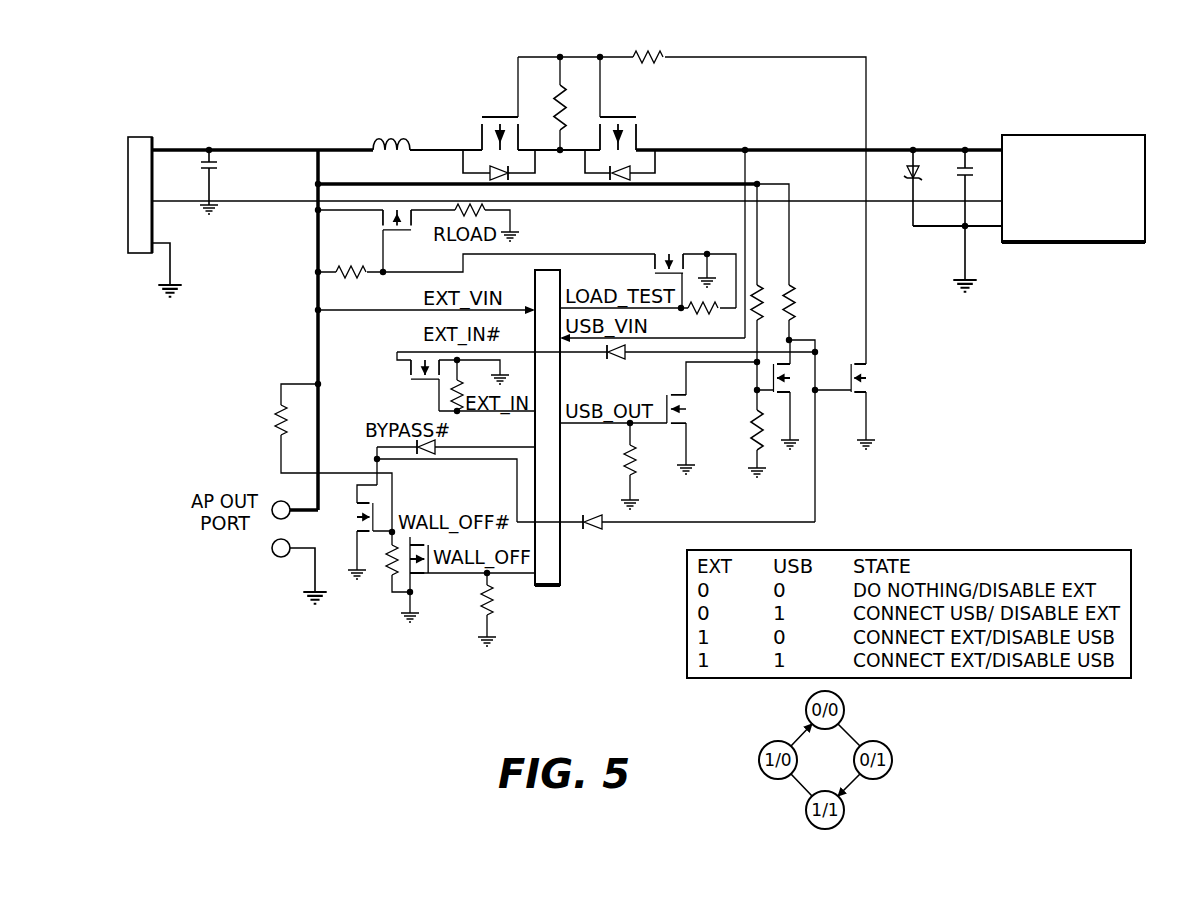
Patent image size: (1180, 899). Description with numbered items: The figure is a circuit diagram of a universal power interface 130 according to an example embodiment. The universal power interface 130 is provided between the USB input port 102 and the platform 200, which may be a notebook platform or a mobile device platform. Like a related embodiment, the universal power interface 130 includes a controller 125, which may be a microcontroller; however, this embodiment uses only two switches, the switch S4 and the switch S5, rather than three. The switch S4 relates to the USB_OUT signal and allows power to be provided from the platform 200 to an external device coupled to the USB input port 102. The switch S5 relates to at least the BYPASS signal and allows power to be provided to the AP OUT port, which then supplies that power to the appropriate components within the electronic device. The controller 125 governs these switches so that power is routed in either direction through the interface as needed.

The USB input port 102 is at (131, 254).
The universal power interface 130 is at (412, 108).
The switch S4 is at (673, 102).
The platform 200 is at (1083, 133).
The controller 125 is at (562, 586).
The switch S5 is at (388, 601).